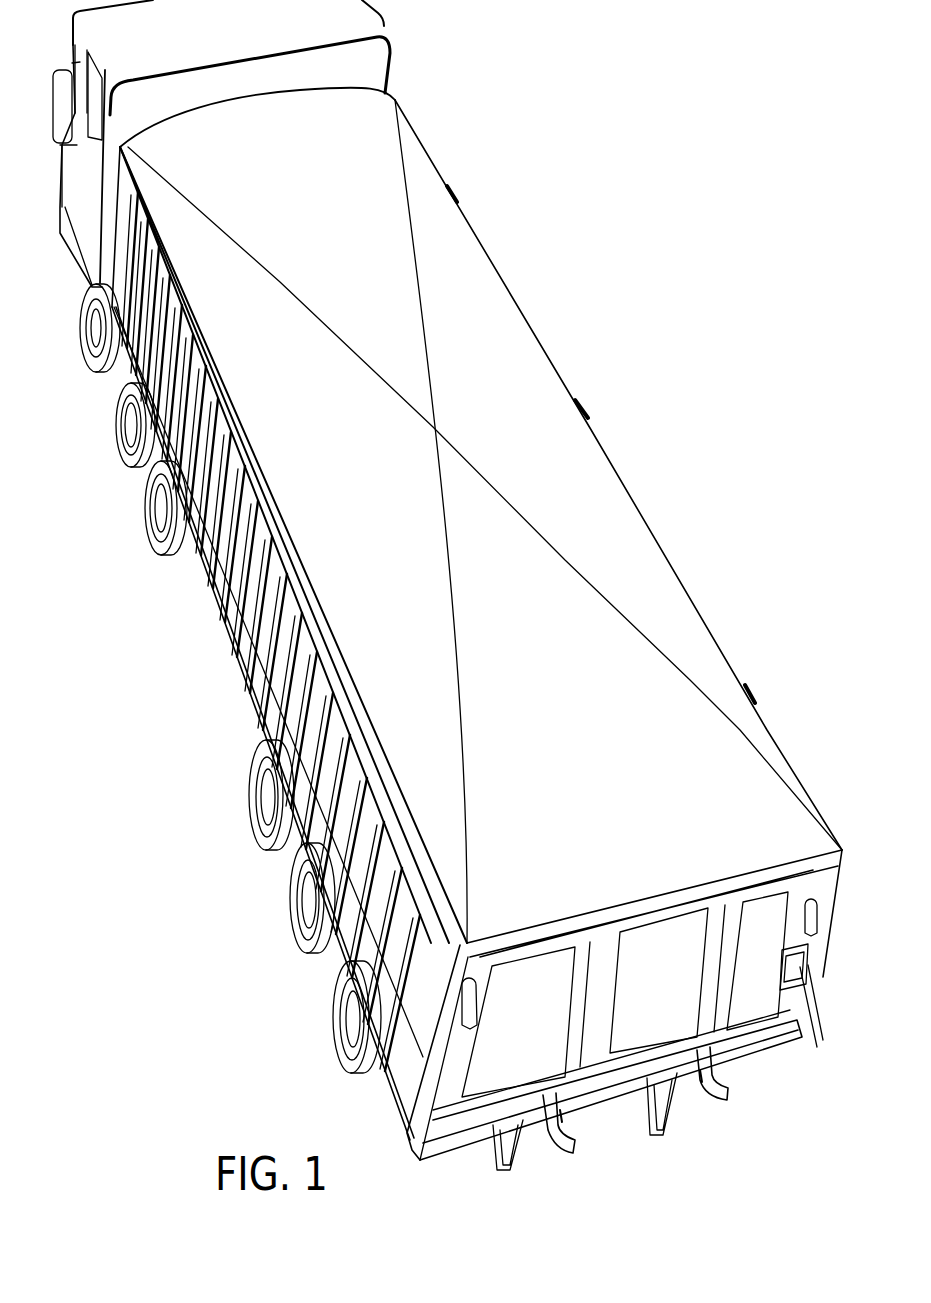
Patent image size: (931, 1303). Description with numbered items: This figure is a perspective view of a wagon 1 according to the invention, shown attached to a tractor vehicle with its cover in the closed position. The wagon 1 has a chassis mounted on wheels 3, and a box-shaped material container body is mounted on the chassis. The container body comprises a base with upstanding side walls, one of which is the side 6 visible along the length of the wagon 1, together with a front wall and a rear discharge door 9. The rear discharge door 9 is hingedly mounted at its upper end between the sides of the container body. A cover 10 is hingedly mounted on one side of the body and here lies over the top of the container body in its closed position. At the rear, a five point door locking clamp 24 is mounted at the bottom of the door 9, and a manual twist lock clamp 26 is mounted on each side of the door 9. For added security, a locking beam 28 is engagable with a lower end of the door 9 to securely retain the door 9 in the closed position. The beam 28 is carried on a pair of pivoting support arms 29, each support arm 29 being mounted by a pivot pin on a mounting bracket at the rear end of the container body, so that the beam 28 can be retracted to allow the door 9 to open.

The wagon 1 is at (227, 752).
The wheels 3 is at (343, 1040).
The side 6 is at (360, 893).
The rear discharge door 9 is at (653, 947).
The cover 10 is at (520, 358).
The five point door locking clamp 24 is at (468, 1140).
The manual twist lock clamp 26 is at (473, 1013).
The locking beam 28 is at (632, 1077).
The pivoting support arms 29 is at (552, 1130).